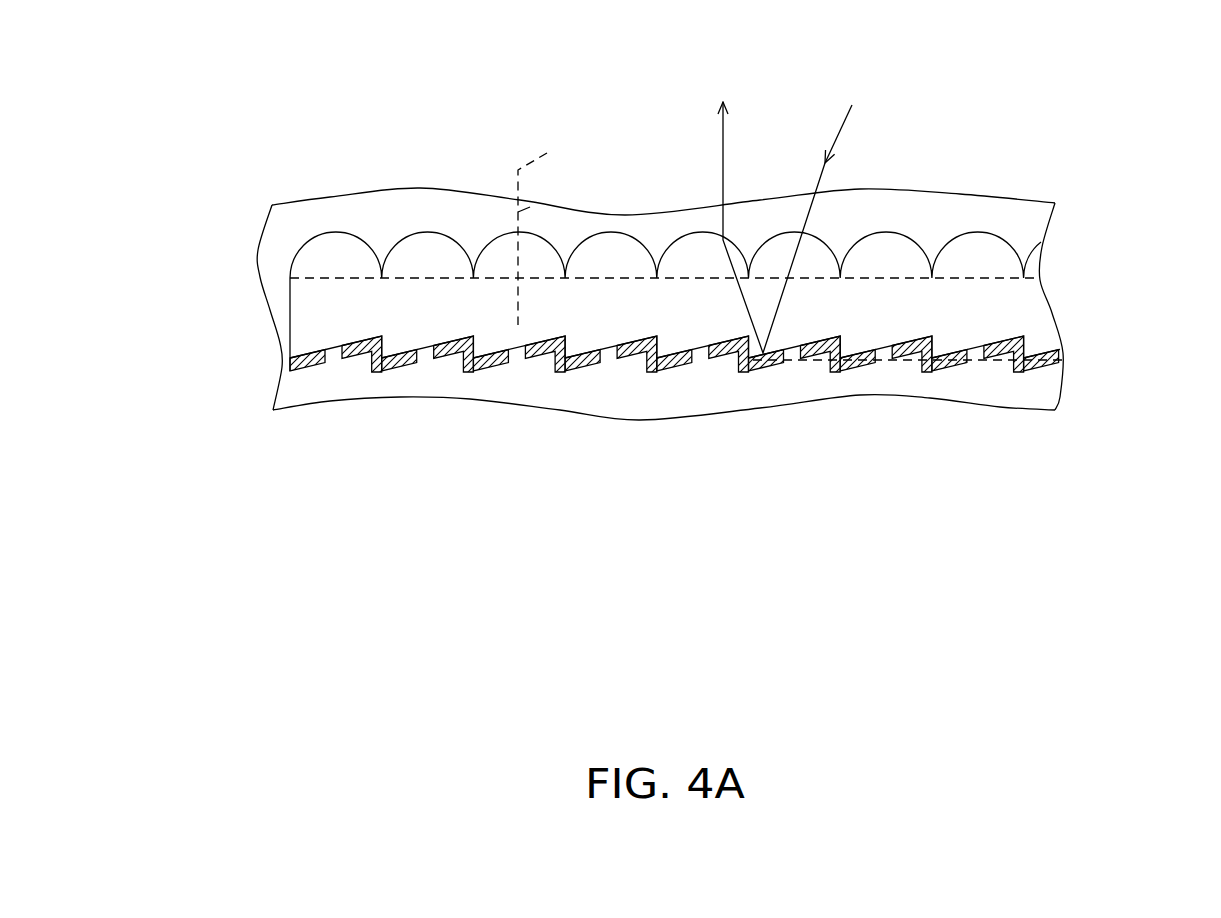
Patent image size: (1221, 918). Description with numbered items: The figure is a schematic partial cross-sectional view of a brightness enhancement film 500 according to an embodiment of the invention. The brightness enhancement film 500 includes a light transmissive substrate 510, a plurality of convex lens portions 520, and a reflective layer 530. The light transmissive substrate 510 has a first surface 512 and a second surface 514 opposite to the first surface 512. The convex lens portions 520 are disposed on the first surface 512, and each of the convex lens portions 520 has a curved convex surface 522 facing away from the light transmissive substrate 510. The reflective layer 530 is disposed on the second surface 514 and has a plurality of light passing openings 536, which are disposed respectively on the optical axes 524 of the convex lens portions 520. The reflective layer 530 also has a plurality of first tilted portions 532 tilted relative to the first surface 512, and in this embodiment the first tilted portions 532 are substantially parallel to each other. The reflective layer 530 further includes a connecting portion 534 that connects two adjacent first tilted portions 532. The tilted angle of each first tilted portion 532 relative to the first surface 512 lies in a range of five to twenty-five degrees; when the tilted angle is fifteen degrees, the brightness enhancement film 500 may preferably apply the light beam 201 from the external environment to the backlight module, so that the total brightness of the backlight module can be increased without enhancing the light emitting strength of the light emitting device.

The light beam 201 is at (840, 127).
The brightness enhancement film 500 is at (1208, 572).
The light transmissive substrate 510 is at (307, 308).
The first surface 512 is at (335, 277).
The second surface 514 is at (335, 347).
The convex lens portions 520 is at (338, 243).
The curved convex surface 522 is at (371, 243).
The optical axes 524 is at (555, 228).
The reflective layer 530 is at (303, 370).
The first tilted portions 532 is at (540, 355).
The connecting portion 534 is at (473, 357).
The light passing openings 536 is at (338, 360).